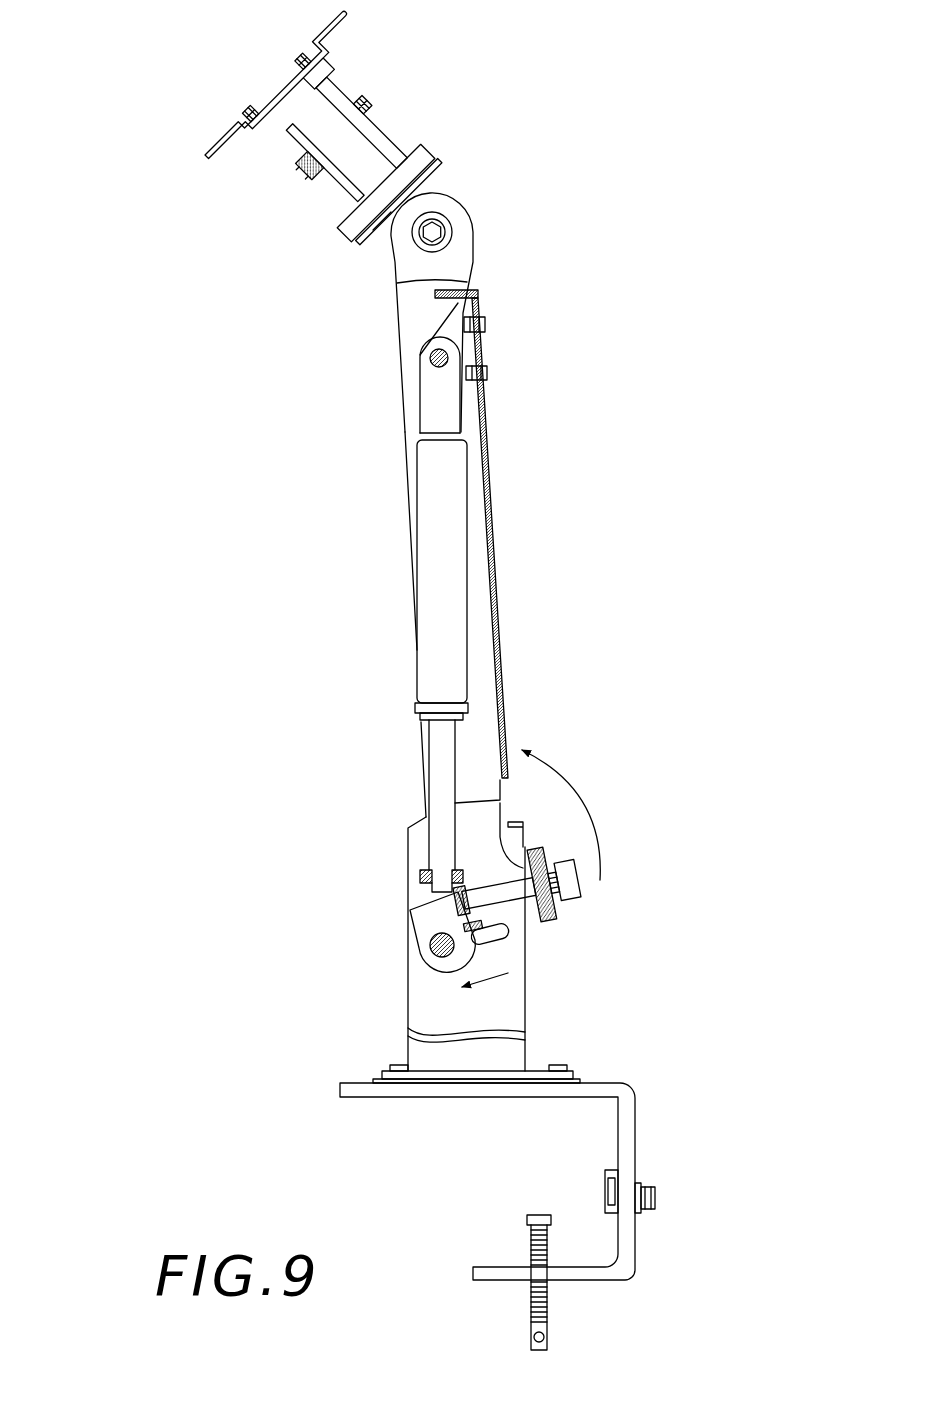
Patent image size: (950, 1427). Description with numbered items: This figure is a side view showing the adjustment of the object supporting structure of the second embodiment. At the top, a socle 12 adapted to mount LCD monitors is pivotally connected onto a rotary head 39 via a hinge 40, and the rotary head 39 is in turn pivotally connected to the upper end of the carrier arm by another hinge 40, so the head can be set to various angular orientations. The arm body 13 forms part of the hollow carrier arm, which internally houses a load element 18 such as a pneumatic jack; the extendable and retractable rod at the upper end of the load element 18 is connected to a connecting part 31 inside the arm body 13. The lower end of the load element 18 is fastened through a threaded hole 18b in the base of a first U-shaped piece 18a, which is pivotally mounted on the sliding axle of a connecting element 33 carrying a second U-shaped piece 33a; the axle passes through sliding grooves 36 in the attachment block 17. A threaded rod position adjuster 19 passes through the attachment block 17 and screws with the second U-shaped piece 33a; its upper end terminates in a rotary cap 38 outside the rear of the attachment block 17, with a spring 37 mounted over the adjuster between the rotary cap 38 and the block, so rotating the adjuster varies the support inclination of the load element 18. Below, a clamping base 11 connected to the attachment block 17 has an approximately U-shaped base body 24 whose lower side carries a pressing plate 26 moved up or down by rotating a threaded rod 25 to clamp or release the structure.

The clamping base 11 is at (690, 1090).
The socle 12 is at (133, 103).
The arm body 13 is at (500, 556).
The attachment block 17 is at (510, 1003).
The load element 18 is at (425, 566).
The first U-shaped piece 18a is at (436, 889).
The threaded hole 18b is at (428, 873).
The threaded rod position adjuster 19 is at (527, 913).
The base body 24 is at (632, 1136).
The threaded rod 25 is at (530, 1309).
The pressing plate 26 is at (539, 1214).
The connecting part 31 is at (435, 328).
The connecting element 33 is at (430, 948).
The second U-shaped piece 33a is at (420, 921).
The sliding groove 36 is at (490, 930).
The spring 37 is at (549, 899).
The rotary cap 38 is at (566, 885).
The rotary head 39 is at (444, 160).
The hinge 40 is at (306, 170).